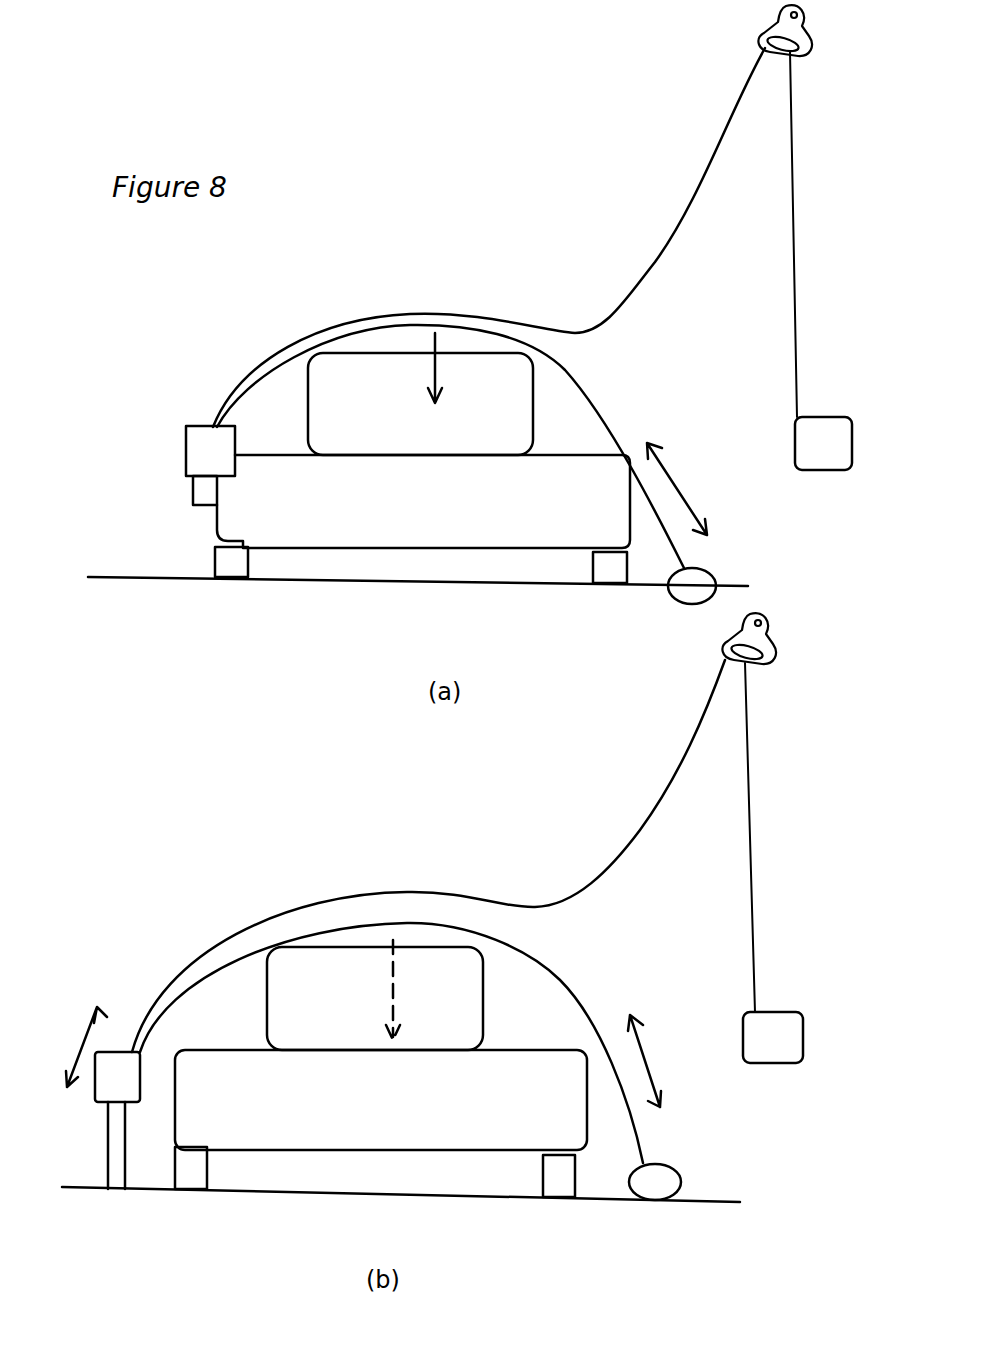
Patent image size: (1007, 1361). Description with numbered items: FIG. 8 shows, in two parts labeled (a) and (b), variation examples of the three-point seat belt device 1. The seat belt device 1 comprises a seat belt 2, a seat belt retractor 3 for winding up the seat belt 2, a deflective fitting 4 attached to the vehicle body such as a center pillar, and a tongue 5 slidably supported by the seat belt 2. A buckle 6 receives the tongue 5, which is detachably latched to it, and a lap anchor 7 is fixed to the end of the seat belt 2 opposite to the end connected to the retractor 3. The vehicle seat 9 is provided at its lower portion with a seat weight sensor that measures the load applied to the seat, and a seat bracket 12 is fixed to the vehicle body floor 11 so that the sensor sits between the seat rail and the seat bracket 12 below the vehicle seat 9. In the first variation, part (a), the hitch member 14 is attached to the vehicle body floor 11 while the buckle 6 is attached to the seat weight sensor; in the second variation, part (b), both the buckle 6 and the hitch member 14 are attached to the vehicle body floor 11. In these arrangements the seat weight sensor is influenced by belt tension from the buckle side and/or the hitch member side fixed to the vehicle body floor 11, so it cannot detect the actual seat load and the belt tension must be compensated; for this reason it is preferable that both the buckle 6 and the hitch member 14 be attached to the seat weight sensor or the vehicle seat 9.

The seat belt device 1 is at (510, 190).
The seat belt 2 is at (672, 243).
The seat belt retractor 3 is at (800, 455).
The deflective fitting 4 is at (760, 33).
The tongue 5 is at (198, 447).
The buckle 6 is at (198, 490).
The lap anchor 7 is at (705, 578).
The vehicle seat 9 is at (432, 523).
The vehicle body floor 11 is at (414, 654).
The seat bracket 12 is at (222, 565).
The hitch member 14 is at (742, 604).